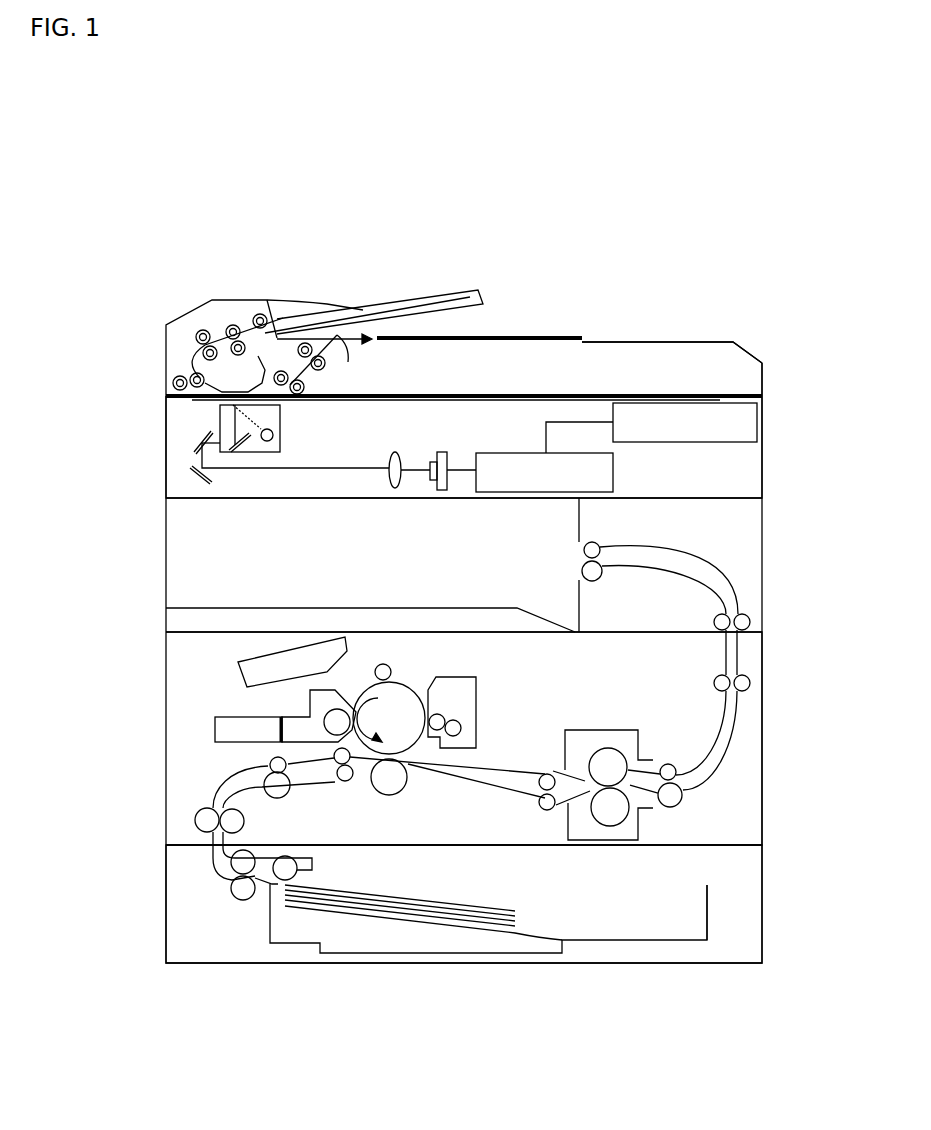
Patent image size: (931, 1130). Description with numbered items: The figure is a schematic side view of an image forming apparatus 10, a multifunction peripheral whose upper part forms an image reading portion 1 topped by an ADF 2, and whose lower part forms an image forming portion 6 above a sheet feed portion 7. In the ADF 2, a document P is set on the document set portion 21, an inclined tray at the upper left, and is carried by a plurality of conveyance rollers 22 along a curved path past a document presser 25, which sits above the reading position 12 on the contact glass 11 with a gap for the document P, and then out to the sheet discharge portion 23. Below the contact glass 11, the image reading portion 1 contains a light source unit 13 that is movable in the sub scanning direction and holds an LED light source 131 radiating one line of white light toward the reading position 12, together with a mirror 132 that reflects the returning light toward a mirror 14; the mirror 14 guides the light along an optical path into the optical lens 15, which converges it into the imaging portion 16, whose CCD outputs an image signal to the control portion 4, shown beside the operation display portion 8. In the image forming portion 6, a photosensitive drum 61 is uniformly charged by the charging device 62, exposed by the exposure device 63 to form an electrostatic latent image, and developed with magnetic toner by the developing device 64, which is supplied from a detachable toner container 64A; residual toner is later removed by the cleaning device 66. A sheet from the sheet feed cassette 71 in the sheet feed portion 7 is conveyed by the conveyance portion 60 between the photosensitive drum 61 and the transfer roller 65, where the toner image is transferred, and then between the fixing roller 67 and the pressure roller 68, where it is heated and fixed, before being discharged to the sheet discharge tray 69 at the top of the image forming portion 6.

The image forming apparatus 10 is at (162, 268).
The image reading portion 1 is at (166, 459).
The ADF 2 is at (166, 343).
The document set portion 21 is at (338, 309).
The document P is at (360, 316).
The conveyance rollers 22 is at (204, 329).
The sheet discharge portion 23 is at (598, 342).
The document presser 25 is at (307, 350).
The reading position 12 is at (232, 398).
The light source unit 13 is at (272, 434).
The LED light source 131 is at (283, 422).
The mirror 132 is at (250, 452).
The mirror 14 is at (203, 438).
The contact glass 11 is at (428, 460).
The optical lens 15 is at (396, 492).
The imaging portion 16 is at (441, 492).
The control portion 4 is at (503, 453).
The operation display portion 8 is at (757, 421).
The sheet discharge tray 69 is at (500, 608).
The image forming portion 6 is at (192, 657).
The photosensitive drum 61 is at (400, 684).
The charging device 62 is at (375, 673).
The exposure device 63 is at (238, 675).
The developing device 64 is at (310, 697).
The toner container 64A is at (225, 742).
The cleaning device 66 is at (450, 676).
The transfer roller 65 is at (389, 796).
The fixing roller 67 is at (623, 752).
The pressure roller 68 is at (598, 826).
The conveyance portion 60 is at (193, 796).
The sheet feed portion 7 is at (166, 907).
The sheet feed cassette 71 is at (707, 915).